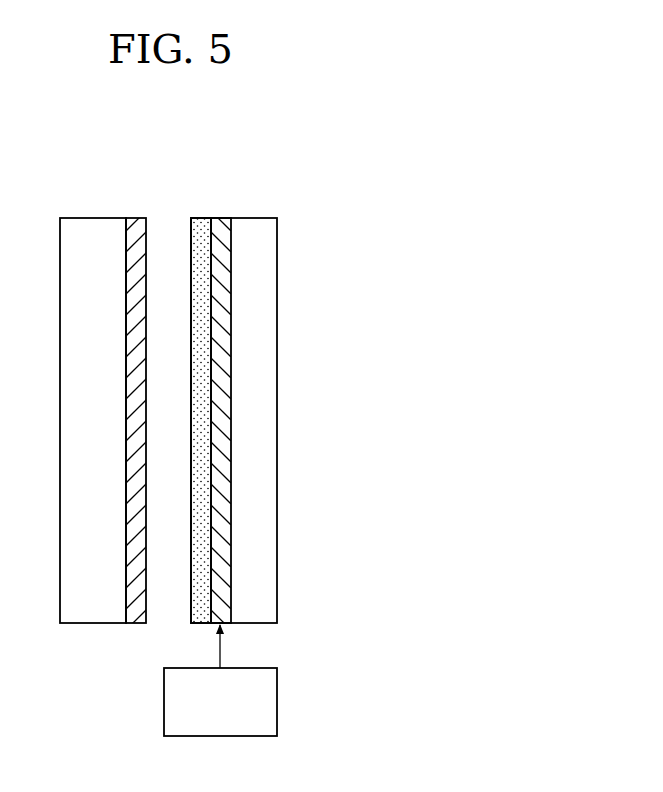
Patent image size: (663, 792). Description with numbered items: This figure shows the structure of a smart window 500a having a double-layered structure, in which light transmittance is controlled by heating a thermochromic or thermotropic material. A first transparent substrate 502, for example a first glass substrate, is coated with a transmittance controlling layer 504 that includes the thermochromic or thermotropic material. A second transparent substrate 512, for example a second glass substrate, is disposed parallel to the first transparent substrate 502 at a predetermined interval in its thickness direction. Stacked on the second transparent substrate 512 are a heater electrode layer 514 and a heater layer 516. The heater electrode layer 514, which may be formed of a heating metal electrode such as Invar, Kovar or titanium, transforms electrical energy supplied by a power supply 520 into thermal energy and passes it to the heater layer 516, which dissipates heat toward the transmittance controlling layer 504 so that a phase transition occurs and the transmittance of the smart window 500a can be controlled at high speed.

The smart window 500a is at (313, 188).
The first transparent substrate 502 is at (87, 227).
The transmittance controlling layer 504 is at (137, 224).
The second transparent substrate 512 is at (253, 227).
The heater electrode layer 514 is at (220, 228).
The heater layer 516 is at (202, 227).
The power supply 520 is at (277, 688).